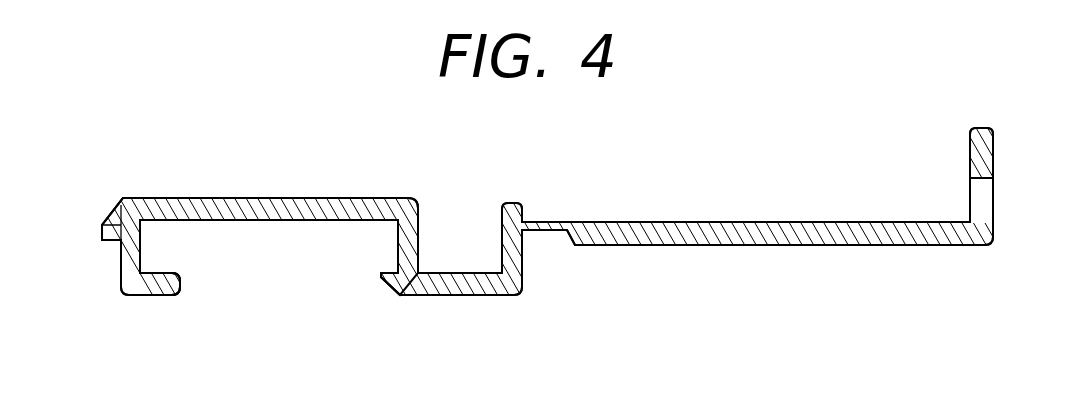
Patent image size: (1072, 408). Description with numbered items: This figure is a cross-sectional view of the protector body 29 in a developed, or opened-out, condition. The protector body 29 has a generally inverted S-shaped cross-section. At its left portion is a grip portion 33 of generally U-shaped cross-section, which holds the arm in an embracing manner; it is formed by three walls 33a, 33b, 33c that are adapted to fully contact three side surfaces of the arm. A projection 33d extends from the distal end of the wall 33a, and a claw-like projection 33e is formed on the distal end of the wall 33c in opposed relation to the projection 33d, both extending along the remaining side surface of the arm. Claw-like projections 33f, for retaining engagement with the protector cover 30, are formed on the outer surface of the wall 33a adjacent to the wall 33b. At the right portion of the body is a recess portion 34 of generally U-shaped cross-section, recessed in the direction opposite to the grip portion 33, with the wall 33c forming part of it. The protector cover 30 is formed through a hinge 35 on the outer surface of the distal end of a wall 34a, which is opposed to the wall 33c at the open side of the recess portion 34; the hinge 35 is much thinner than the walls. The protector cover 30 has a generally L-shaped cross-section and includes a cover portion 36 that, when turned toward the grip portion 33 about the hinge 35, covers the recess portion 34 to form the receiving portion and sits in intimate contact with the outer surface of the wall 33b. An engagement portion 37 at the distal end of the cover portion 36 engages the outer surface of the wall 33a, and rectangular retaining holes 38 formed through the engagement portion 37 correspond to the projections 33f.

The protector body 29 is at (272, 197).
The protector cover 30 is at (762, 228).
The grip portion 33 is at (255, 235).
The wall 33a is at (118, 265).
The wall 33b is at (212, 199).
The wall 33c is at (393, 243).
The projection 33d is at (160, 296).
The claw-like projection 33e is at (380, 276).
The claw-like projection 33f is at (110, 210).
The recess portion 34 is at (460, 228).
The wall 34a is at (523, 248).
The hinge 35 is at (540, 220).
The cover portion 36 is at (812, 240).
The engagement portion 37 is at (987, 152).
The retaining hole 38 is at (985, 208).